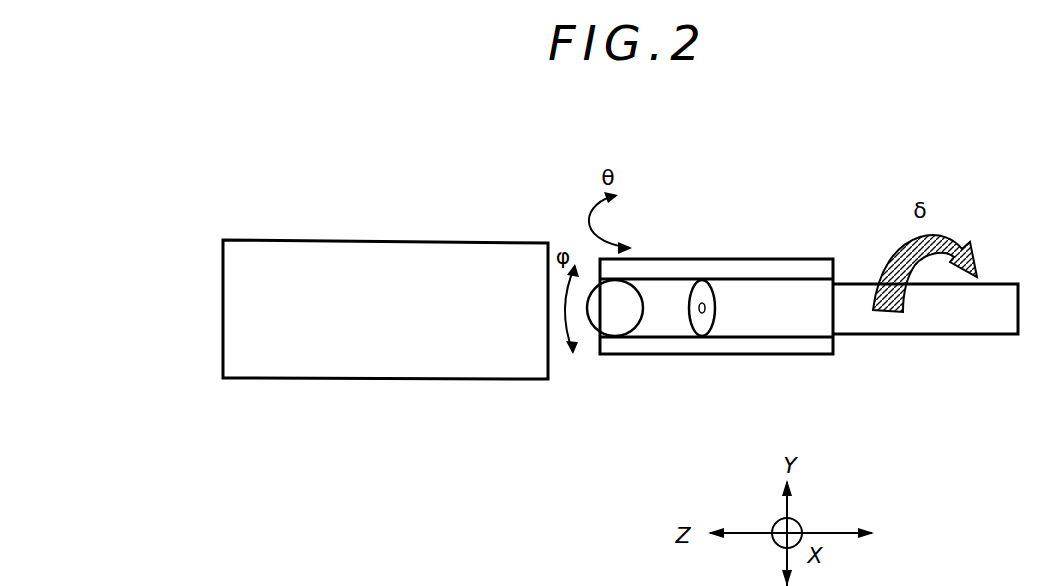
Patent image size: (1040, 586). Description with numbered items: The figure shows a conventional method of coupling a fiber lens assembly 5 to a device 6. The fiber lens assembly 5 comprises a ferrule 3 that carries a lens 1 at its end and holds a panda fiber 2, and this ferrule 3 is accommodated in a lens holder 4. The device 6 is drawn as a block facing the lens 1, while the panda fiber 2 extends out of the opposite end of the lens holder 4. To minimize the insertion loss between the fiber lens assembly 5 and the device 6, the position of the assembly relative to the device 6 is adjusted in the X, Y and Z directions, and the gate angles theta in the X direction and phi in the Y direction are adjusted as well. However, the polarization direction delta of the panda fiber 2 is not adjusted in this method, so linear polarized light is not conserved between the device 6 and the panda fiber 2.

The lens 1 is at (598, 330).
The panda fiber 2 is at (965, 335).
The ferrule 3 is at (785, 330).
The lens holder 4 is at (692, 355).
The fiber lens assembly 5 is at (724, 240).
The device 6 is at (332, 240).